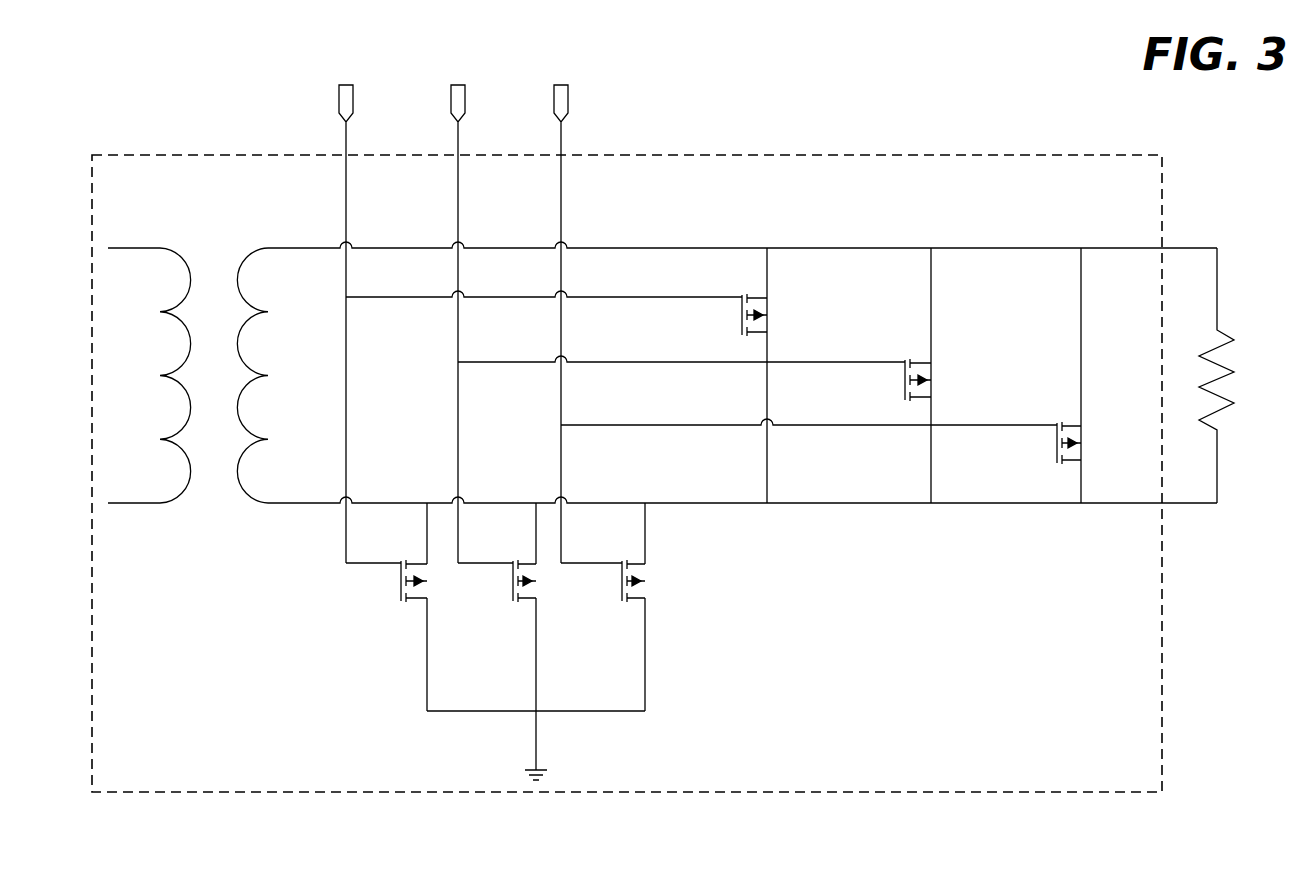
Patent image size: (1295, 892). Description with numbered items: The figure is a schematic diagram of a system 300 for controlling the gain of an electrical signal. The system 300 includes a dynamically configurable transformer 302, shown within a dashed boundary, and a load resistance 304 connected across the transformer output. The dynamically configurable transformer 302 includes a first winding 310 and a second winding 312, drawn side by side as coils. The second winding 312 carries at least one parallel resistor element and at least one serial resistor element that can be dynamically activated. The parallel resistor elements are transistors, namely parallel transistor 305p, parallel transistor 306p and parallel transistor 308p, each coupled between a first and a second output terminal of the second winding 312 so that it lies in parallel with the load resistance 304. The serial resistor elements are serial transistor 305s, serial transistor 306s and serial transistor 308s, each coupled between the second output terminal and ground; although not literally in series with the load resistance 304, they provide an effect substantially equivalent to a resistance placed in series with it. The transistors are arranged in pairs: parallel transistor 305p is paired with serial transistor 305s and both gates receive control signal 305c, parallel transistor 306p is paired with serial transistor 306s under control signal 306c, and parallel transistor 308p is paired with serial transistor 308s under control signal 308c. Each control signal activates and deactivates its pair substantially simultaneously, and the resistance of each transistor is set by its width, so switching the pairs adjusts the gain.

The system 300 is at (676, 427).
The dynamically configurable transformer 302 is at (654, 473).
The load resistance 304 is at (1229, 375).
The control signal 305c is at (560, 312).
The control signal 306c is at (457, 312).
The control signal 308c is at (345, 312).
The parallel transistor 305p is at (833, 445).
The parallel transistor 306p is at (707, 382).
The parallel transistor 308p is at (570, 316).
The serial transistor 305s is at (615, 607).
The serial transistor 306s is at (510, 607).
The serial transistor 308s is at (399, 607).
The first winding 310 is at (149, 375).
The second winding 312 is at (266, 375).